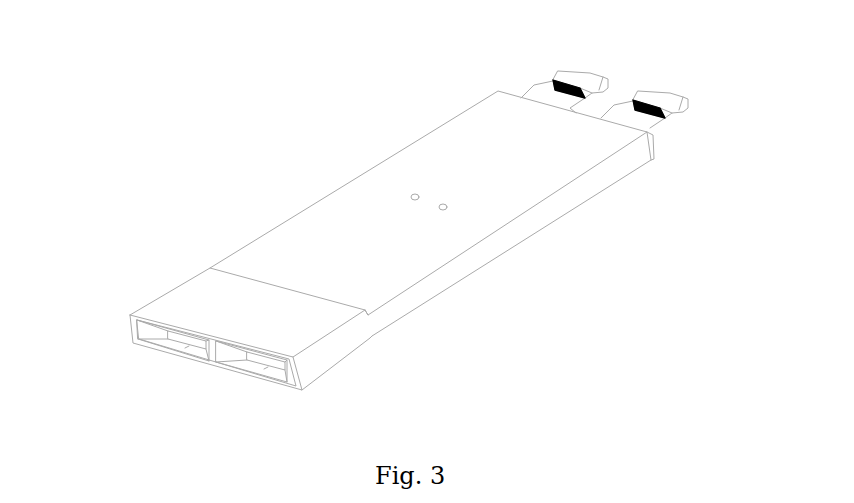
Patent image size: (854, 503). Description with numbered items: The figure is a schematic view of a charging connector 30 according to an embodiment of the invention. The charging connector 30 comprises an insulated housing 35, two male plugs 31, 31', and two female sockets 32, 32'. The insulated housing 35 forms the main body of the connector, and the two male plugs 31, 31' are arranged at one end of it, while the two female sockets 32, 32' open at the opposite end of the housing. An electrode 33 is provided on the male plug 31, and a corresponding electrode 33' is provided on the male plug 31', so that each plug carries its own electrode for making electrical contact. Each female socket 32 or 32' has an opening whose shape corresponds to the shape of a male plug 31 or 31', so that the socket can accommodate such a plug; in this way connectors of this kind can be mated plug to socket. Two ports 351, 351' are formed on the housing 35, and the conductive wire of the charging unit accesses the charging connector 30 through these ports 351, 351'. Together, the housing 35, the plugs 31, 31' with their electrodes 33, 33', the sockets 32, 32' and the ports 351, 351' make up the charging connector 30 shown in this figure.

The charging connector 30 is at (287, 175).
The insulated housing 35 is at (372, 252).
The port 351 is at (365, 164).
The port 351' is at (536, 268).
The female socket 32 is at (125, 353).
The female socket 32' is at (251, 399).
The male plug 31 is at (571, 63).
The male plug 31' is at (667, 87).
The electrode 33 is at (520, 71).
The electrode 33' is at (696, 131).